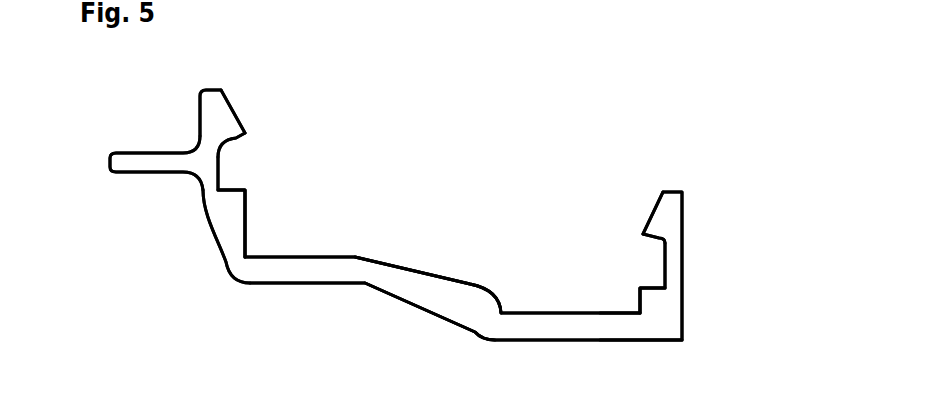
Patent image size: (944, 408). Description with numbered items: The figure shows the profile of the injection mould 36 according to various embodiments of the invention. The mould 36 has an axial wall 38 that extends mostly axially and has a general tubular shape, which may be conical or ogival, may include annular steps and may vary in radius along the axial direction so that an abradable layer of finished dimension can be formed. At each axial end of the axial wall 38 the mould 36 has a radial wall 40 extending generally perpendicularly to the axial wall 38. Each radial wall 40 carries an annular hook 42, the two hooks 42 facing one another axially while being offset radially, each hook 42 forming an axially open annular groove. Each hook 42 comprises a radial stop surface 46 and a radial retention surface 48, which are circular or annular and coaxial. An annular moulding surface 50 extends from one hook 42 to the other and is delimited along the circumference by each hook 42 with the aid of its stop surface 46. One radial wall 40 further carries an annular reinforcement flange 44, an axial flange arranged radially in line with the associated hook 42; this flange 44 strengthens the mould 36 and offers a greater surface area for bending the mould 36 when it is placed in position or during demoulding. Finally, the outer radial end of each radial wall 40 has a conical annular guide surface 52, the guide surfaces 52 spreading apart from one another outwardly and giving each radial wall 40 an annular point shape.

The injection mould 36 is at (722, 180).
The axial wall 38 is at (423, 287).
The radial wall 40 is at (230, 200).
The annular hook 42 is at (276, 163).
The annular reinforcement flange 44 is at (152, 162).
The radial stop surface 46 is at (233, 183).
The radial retention surface 48 is at (237, 146).
The annular moulding surface 50 is at (457, 280).
The annular guide surface 52 is at (233, 113).